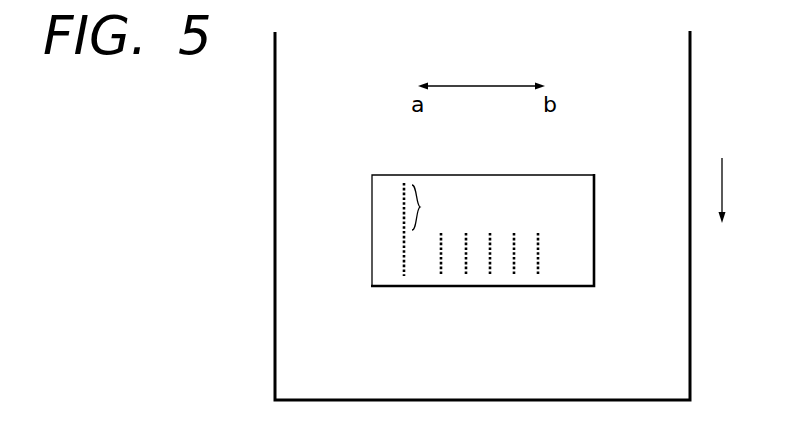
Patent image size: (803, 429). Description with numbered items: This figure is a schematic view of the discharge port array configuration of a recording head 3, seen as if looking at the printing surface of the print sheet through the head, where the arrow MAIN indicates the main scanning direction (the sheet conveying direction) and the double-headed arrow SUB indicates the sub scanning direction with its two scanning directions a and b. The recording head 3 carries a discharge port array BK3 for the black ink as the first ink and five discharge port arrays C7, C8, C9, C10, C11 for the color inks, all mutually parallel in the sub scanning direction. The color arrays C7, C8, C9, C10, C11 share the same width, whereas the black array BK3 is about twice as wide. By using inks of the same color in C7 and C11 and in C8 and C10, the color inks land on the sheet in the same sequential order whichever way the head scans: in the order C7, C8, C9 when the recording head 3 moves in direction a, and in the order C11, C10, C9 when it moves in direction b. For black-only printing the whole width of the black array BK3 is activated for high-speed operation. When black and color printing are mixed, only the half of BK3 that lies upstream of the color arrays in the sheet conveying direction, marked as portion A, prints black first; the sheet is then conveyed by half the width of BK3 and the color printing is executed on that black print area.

The recording head 3 is at (594, 195).
The discharge port array for the black ink BK3 is at (404, 250).
The portion of the black discharge port array A is at (424, 207).
The discharge port array for color ink C7 is at (441, 263).
The discharge port array for color ink C8 is at (466, 264).
The discharge port array for color ink C9 is at (490, 263).
The discharge port array for color ink C10 is at (514, 263).
The discharge port array for color ink C11 is at (538, 263).
The sub scanning direction SUB is at (481, 74).
The main scanning direction MAIN is at (753, 190).